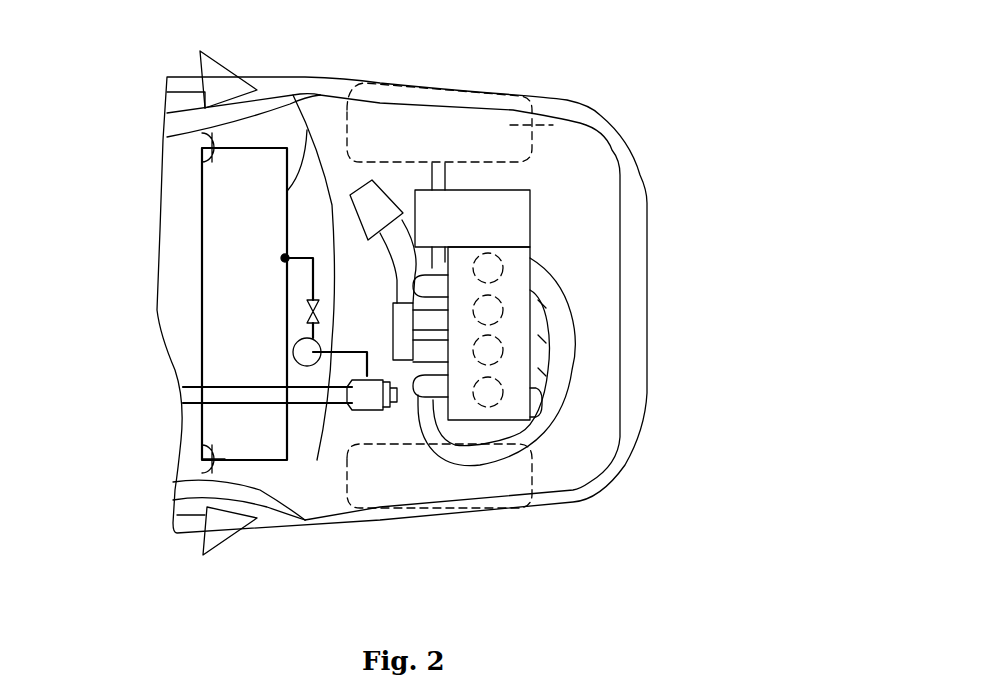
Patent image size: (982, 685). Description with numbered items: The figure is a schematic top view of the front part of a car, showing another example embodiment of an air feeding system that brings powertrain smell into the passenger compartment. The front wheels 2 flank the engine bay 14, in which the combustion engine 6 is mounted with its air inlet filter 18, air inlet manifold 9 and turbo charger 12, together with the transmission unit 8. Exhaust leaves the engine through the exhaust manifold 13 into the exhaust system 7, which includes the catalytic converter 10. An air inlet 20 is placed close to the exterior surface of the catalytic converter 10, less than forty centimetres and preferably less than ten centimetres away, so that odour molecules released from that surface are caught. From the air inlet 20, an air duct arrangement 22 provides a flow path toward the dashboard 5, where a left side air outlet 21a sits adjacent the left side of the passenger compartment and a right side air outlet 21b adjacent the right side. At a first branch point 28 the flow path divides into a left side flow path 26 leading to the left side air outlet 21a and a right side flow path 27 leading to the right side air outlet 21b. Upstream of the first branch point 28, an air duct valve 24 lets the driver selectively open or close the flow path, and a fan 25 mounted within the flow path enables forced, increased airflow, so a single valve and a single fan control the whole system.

The front wheels 2 is at (600, 120).
The dashboard 5 is at (255, 138).
The combustion engine 6 is at (513, 307).
The exhaust system 7 is at (373, 438).
The transmission unit 8 is at (490, 227).
The air inlet manifold 9 is at (553, 352).
The catalytic converter 10 is at (363, 397).
The turbo charger 12 is at (403, 340).
The exhaust manifold 13 is at (433, 353).
The engine bay 14 is at (540, 177).
The air inlet filter 18 is at (380, 210).
The air inlet 20 is at (345, 400).
The left side air outlet 21a is at (200, 155).
The right side air outlet 21b is at (203, 462).
The air duct arrangement 22 is at (302, 258).
The air duct valve 24 is at (317, 330).
The fan 25 is at (297, 357).
The left side flow path 26 is at (307, 190).
The right side flow path 27 is at (305, 297).
The first branch point 28 is at (281, 258).